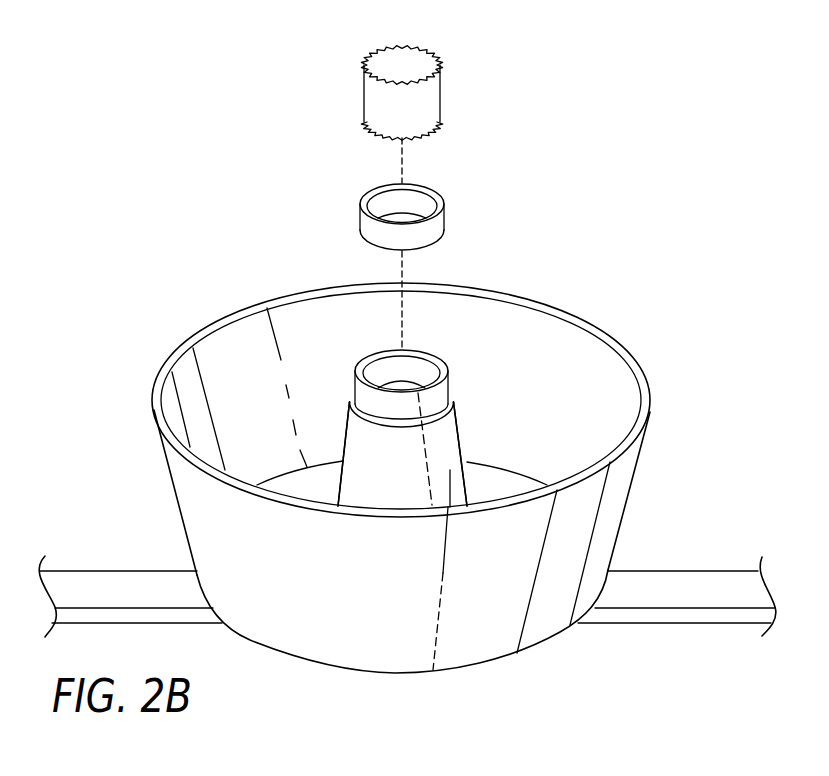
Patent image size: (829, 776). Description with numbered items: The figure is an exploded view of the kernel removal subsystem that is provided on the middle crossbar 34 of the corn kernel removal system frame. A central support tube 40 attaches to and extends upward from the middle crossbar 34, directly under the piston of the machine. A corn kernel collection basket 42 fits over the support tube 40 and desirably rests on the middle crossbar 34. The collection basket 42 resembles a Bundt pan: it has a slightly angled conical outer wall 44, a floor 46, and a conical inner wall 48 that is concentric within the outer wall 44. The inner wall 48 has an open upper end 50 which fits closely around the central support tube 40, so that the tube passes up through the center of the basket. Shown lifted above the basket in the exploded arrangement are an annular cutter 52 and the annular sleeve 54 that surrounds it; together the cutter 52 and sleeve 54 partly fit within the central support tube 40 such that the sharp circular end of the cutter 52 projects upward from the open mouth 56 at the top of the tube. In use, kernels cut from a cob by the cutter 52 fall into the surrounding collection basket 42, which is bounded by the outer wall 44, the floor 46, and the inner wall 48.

The middle crossbar 34 is at (681, 590).
The central support tube 40 is at (358, 507).
The corn kernel collection basket 42 is at (481, 634).
The outer wall 44 is at (213, 522).
The floor 46 is at (298, 492).
The inner wall 48 is at (440, 443).
The open upper end 50 is at (482, 395).
The annular cutter 52 is at (376, 103).
The annular sleeve 54 is at (371, 229).
The open mouth 56 is at (430, 352).